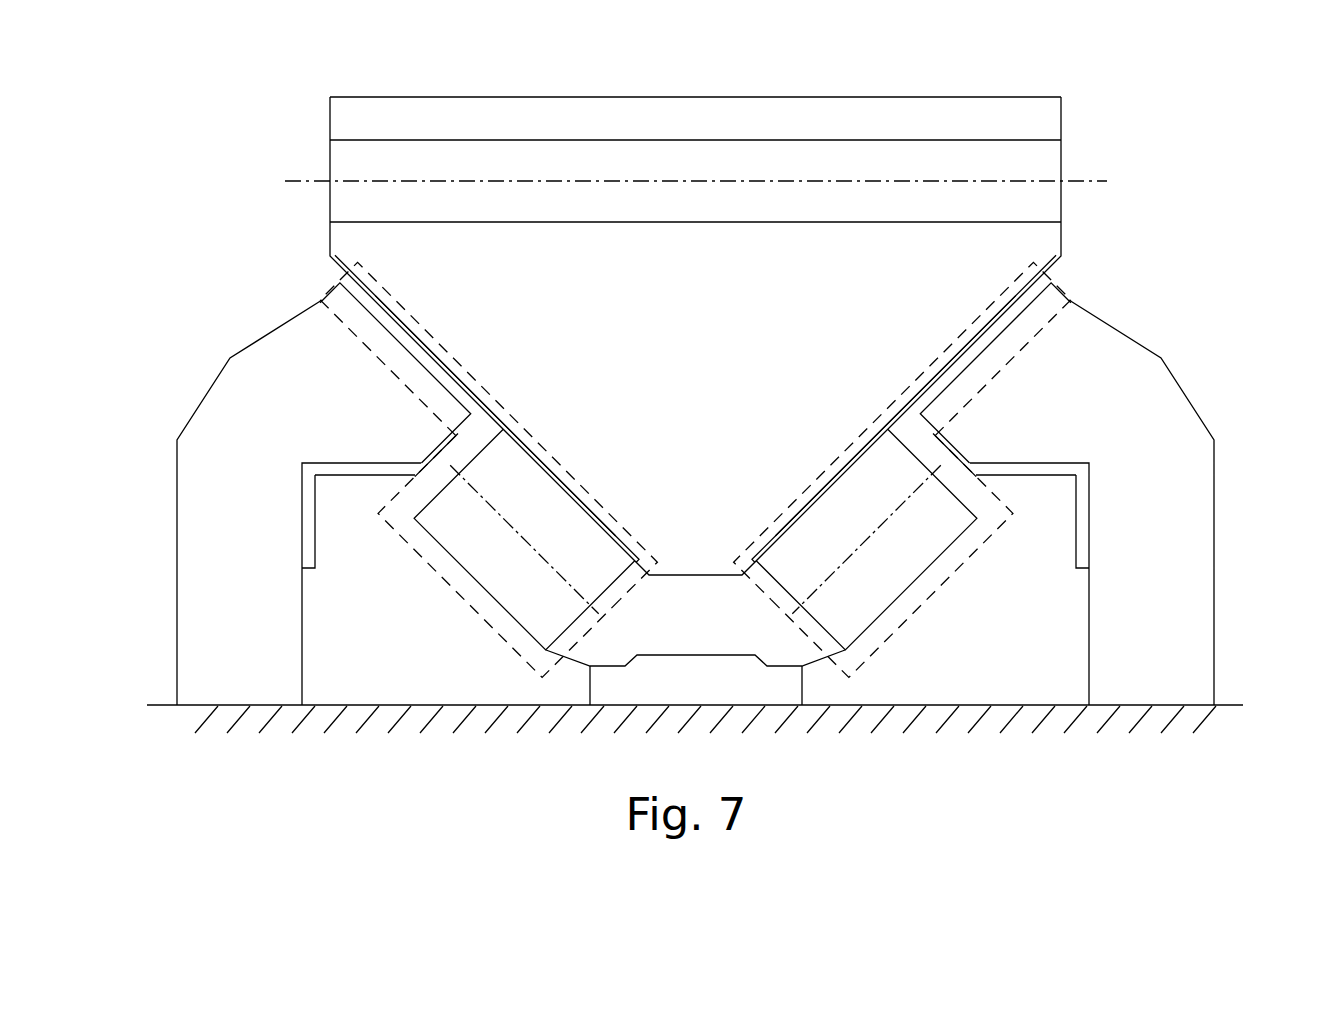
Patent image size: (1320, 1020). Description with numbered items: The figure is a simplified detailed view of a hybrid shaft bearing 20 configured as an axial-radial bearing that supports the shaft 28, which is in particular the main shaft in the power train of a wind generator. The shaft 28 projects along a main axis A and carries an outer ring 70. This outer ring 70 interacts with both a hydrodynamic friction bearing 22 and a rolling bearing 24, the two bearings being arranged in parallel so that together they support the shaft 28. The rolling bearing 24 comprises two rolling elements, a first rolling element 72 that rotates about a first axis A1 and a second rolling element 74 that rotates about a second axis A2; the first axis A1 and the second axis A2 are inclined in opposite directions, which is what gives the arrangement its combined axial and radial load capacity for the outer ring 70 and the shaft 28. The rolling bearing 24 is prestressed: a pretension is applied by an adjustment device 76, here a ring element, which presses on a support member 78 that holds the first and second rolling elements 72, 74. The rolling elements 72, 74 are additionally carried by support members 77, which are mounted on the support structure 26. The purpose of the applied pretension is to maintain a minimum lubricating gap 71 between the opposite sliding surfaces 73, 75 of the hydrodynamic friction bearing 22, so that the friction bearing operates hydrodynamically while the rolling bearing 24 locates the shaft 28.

The hybrid shaft bearing 20 is at (314, 262).
The hydrodynamic friction bearing 22 is at (325, 282).
The rolling bearing 24 is at (410, 549).
The support structure 26 is at (1195, 703).
The shaft 28 is at (920, 162).
The outer ring 70 is at (993, 260).
The lubricating gap 71 is at (390, 325).
The first rolling element 72 is at (478, 584).
The sliding surface 73 is at (418, 353).
The second rolling element 74 is at (917, 580).
The sliding surface 75 is at (372, 328).
The adjustment device 76 is at (730, 690).
The support member 77 is at (200, 608).
The support member 78 is at (697, 638).
The main axis A is at (1084, 180).
The first axis A1 is at (557, 578).
The second axis A2 is at (855, 557).